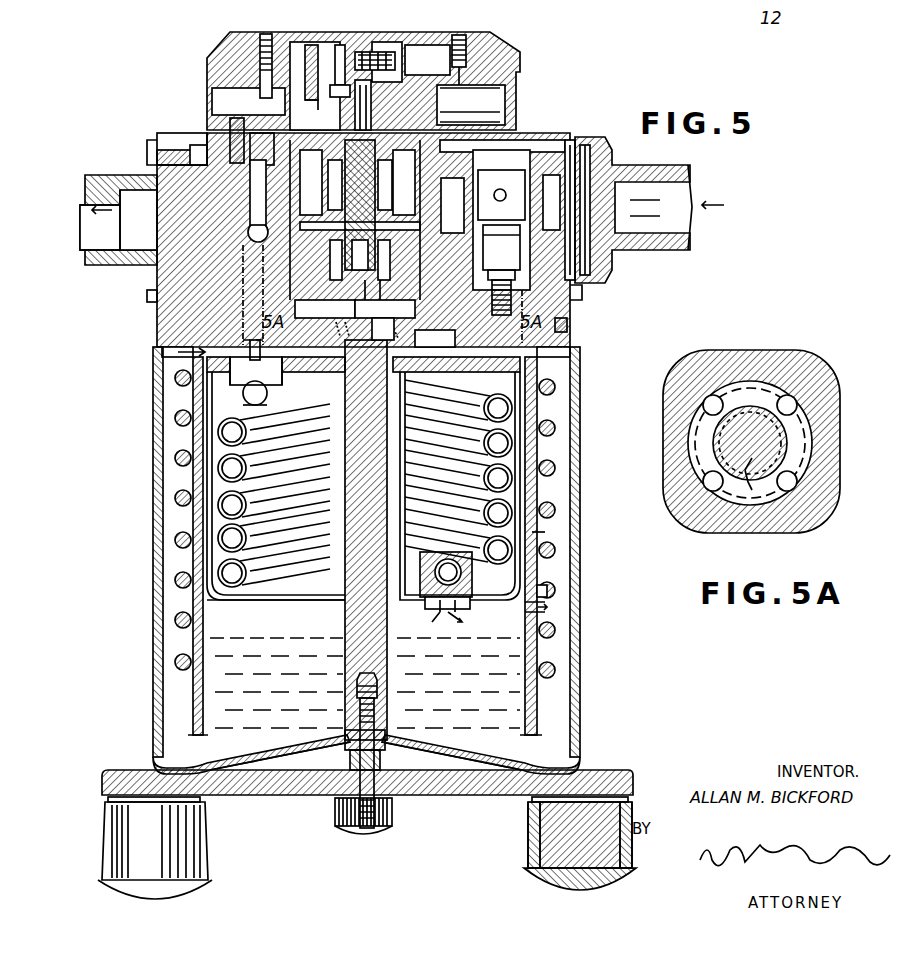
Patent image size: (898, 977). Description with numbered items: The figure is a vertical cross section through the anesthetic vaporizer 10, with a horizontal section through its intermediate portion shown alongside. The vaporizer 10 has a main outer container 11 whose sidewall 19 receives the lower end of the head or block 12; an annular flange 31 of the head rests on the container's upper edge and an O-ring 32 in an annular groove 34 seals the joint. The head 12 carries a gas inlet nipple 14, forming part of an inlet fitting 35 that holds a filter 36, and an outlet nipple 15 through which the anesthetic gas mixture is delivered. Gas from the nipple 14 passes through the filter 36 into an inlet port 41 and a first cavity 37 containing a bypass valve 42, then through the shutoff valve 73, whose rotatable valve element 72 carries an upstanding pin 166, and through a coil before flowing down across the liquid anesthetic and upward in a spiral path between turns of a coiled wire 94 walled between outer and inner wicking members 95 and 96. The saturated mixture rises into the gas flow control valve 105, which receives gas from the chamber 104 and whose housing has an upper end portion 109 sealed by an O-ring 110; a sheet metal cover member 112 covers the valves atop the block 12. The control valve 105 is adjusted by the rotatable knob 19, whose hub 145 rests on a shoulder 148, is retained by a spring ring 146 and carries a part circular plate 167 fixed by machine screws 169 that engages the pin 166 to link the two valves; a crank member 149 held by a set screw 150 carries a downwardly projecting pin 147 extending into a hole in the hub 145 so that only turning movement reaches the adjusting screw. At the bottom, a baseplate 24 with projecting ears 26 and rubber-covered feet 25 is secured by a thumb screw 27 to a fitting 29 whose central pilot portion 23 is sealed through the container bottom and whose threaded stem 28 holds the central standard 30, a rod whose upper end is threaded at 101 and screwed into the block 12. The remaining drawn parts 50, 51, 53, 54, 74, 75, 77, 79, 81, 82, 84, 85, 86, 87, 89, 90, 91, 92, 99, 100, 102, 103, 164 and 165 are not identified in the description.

In FIG. 5, the anesthetic vaporizer 10 is at (589, 124).
In FIG. 5, the main outer container 11 is at (147, 528).
In FIG. 5, the head 12 is at (160, 320).
In FIG. 5A, the head 12 is at (812, 365).
In FIG. 5, the gas inlet nipple 14 is at (655, 168).
In FIG. 5, the outlet nipple 15 is at (96, 175).
In FIG. 5, the rotatable knob 19 is at (505, 38).
In FIG. 5, the central pilot portion 23 is at (392, 740).
In FIG. 5, the baseplate 24 is at (466, 800).
In FIG. 5, the rubber-covered foot 25 is at (195, 845).
In FIG. 5, the projecting ear 26 is at (130, 770).
In FIG. 5, the thumb screw 27 is at (355, 834).
In FIG. 5, the threaded stem 28 is at (380, 690).
In FIG. 5, the fitting 29 is at (345, 790).
In FIG. 5, the central standard 30 is at (388, 612).
In FIG. 5A, the central standard 30 is at (770, 433).
In FIG. 5, the annular outwardly projecting flange 31 is at (584, 292).
In FIG. 5, the O-ring 32 is at (568, 325).
In FIG. 5, the annular groove 34 is at (165, 352).
In FIG. 5, the inlet fitting 35 is at (590, 140).
In FIG. 5, the filter 36 is at (614, 226).
In FIG. 5, the first cavity 37 is at (570, 140).
In FIG. 5, the inlet port 41 is at (565, 212).
In FIG. 5, the bypass valve 42 is at (528, 140).
In FIG. 5, the piston 50 is at (540, 200).
In FIG. 5, the valve 51 is at (453, 201).
In FIG. 5, the ball 53 is at (270, 232).
In FIG. 5, the block 54 is at (193, 254).
In FIG. 5, the rotatable valve element 72 is at (148, 140).
In FIG. 5, the inlet and outlet shutoff valve 73 is at (178, 140).
In FIG. 5, the gasket 74 is at (205, 150).
In FIG. 5, the chamber 75 is at (263, 148).
In FIG. 5, the body portion 77 is at (230, 300).
In FIG. 5, the cup 79 is at (256, 606).
In FIG. 5, the cup wall 81 is at (395, 392).
In FIG. 5, the cup bottom 82 is at (342, 608).
In FIG. 5, the plate 84 is at (466, 372).
In FIG. 5, the ball check 85 is at (270, 392).
In FIG. 5, the valve seat 86 is at (262, 410).
In FIG. 5, the balls 87 is at (220, 472).
In FIG. 5, the block 89 is at (472, 578).
In FIG. 5, the passage 90 is at (482, 605).
In FIG. 5, the port 91 is at (447, 618).
In FIG. 5, the inner tube 92 is at (515, 700).
In FIG. 5, the coiled wire 94 is at (552, 592).
In FIG. 5, the outer wicking member 95 is at (560, 400).
In FIG. 5, the inner wicking member 96 is at (550, 532).
In FIG. 5, the gap 99 is at (572, 350).
In FIG. 5, the coil spring 100 is at (425, 405).
In FIG. 5A, the threaded upper end 101 is at (745, 408).
In FIG. 5, the port 102 is at (410, 342).
In FIG. 5A, the port 102 is at (748, 490).
In FIG. 5, the holes 103 is at (345, 330).
In FIG. 5A, the holes 103 is at (706, 408).
In FIG. 5, the chamber 104 is at (338, 308).
In FIG. 5A, the chamber 104 is at (775, 380).
In FIG. 5, the gas flow control valve 105 is at (450, 152).
In FIG. 5, the upper end portion of housing 109 is at (430, 128).
In FIG. 5, the O-ring 110 is at (375, 300).
In FIG. 5, the sheet metal cover member 112 is at (518, 133).
In FIG. 5, the hub 145 is at (412, 60).
In FIG. 5, the spring ring 146 is at (340, 45).
In FIG. 5, the downwardly projecting pin 147 is at (275, 16).
In FIG. 5, the shoulder 148 is at (440, 103).
In FIG. 5, the crank member 149 is at (338, 16).
In FIG. 5, the set screw 150 is at (375, 52).
In FIG. 5, the passage 164 is at (106, 221).
In FIG. 5, the shoulder 165 is at (150, 296).
In FIG. 5, the upstanding pin 166 is at (237, 120).
In FIG. 5, the part circular plate 167 is at (248, 101).
In FIG. 5, the machine screw 169 is at (427, 60).